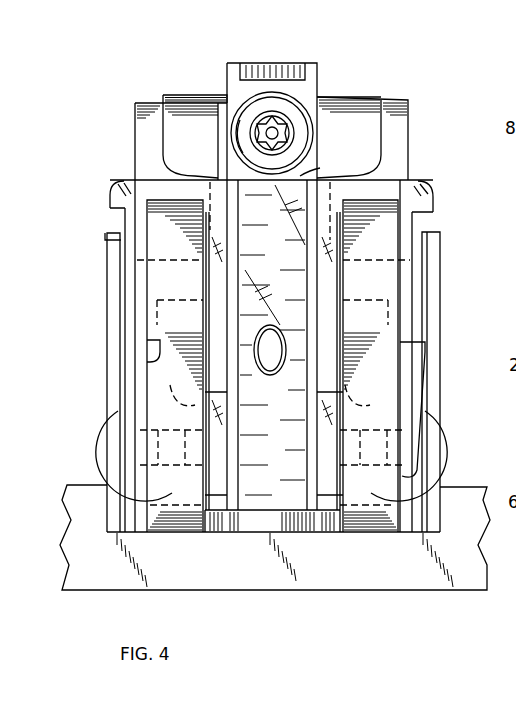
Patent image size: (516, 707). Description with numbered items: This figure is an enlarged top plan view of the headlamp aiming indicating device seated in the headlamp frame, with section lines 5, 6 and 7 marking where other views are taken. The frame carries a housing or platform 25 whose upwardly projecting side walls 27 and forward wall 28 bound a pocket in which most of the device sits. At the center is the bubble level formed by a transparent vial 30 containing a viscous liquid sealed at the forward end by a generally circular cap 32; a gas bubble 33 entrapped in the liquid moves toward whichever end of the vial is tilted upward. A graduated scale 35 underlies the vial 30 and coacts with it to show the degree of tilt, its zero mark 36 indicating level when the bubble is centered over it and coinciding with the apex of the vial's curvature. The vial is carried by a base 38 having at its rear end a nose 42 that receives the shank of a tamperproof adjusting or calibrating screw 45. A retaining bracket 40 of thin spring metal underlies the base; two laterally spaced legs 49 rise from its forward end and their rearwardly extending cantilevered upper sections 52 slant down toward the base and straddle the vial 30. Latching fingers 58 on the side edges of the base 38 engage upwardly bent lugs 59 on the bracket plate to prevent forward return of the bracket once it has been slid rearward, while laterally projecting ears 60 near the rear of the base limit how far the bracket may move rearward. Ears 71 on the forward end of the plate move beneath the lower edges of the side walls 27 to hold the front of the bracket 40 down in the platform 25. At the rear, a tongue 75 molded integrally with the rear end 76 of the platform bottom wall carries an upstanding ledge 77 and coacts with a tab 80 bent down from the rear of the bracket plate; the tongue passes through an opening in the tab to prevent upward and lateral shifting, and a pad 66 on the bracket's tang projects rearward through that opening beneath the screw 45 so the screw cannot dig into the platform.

The section line 5- 5 is at (70, 127).
The section line 6- 6 is at (270, 80).
The section line 7- 7 is at (125, 433).
The housing or platform 25 is at (393, 573).
The side walls 27 is at (110, 352).
The forward wall 28 is at (250, 580).
The transparent vial 30 is at (316, 270).
The cap 32 is at (283, 532).
The gas bubble 33 is at (284, 347).
The graduated scale 35 is at (365, 167).
The zero mark 36 is at (245, 527).
The base 38 is at (409, 187).
The retaining bracket 40 is at (182, 514).
The nose 42 is at (303, 168).
The adjusting or calibrating screw 45 is at (283, 112).
The legs 49 is at (162, 276).
The cantilevered upper section 52 is at (172, 357).
The latching fingers 58 is at (134, 347).
The lugs 59 is at (122, 242).
The ears 60 is at (121, 187).
The pad 66 is at (224, 100).
The ears 71 is at (102, 447).
The tongue 75 is at (228, 78).
The rear end of the bottom wall 76 is at (393, 101).
The ledge 77 is at (285, 75).
The tab 80 is at (362, 99).